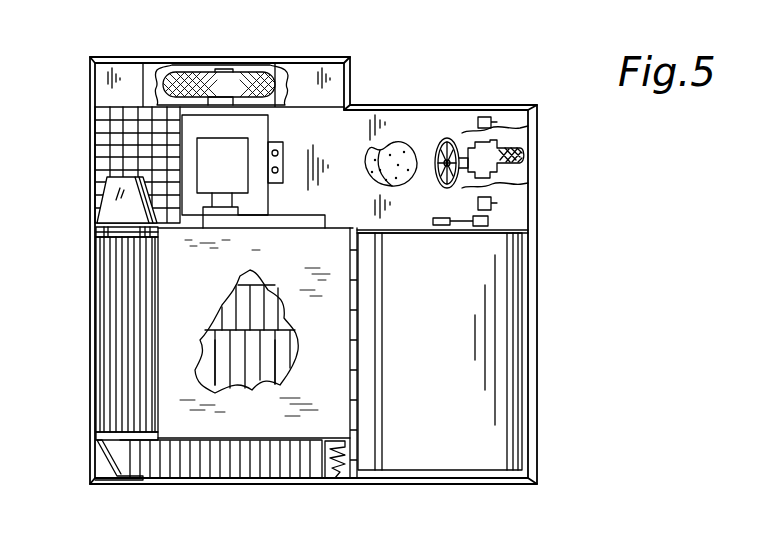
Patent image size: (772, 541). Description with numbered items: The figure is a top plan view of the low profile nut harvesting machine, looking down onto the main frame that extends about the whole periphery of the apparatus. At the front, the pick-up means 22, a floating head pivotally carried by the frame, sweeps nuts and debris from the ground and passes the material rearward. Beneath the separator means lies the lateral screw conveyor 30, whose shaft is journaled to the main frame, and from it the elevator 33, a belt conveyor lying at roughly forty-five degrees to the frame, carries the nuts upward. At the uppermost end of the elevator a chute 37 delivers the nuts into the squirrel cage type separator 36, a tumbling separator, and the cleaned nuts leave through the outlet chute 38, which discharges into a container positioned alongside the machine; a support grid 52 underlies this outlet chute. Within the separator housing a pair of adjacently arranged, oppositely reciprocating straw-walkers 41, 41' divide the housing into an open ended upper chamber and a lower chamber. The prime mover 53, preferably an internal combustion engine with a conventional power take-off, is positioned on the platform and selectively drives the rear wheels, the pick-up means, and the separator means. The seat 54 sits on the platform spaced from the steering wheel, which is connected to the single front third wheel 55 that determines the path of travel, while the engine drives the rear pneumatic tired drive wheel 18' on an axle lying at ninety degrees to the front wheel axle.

The drive wheel 18' is at (242, 57).
The support grid 52 is at (115, 132).
The outlet chute 38 is at (112, 195).
The squirrel cage type separator 36 is at (160, 271).
The chute 37 is at (105, 460).
The elevator 33 is at (217, 477).
The lateral screw conveyor 30 is at (332, 477).
The prime mover 53 is at (236, 170).
The seat 54 is at (404, 148).
The third wheel 55 is at (522, 152).
The pick-up means 22 is at (440, 343).
The straw-walker 41 is at (253, 316).
The straw-walker 41' is at (277, 362).